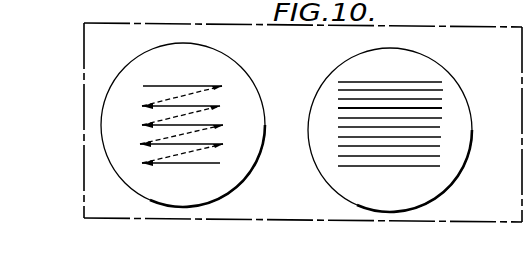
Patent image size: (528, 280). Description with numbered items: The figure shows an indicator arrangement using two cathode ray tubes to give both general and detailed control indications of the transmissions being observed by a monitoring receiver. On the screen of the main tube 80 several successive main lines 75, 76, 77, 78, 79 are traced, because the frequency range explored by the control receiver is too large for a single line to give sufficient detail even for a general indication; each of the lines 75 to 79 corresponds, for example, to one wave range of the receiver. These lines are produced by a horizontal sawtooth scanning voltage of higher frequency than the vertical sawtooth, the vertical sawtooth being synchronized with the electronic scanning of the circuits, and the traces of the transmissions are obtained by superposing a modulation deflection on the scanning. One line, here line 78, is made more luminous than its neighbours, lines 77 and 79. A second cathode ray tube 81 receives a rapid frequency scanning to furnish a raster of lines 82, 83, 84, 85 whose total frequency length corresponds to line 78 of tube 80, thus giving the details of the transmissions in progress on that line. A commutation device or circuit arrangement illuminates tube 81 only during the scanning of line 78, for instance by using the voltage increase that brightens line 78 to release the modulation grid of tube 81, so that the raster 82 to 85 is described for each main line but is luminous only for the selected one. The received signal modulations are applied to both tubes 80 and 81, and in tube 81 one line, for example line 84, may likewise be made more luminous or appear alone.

The main line 75 is at (183, 85).
The main line 76 is at (220, 106).
The main line 77 is at (223, 125).
The main line 78 is at (223, 144).
The main line 79 is at (220, 163).
The cathode ray tube 80 is at (223, 57).
The second cathode ray tube 81 is at (428, 58).
The line 82 is at (442, 83).
The line 83 is at (443, 91).
The line 84 is at (442, 109).
The line 85 is at (440, 167).